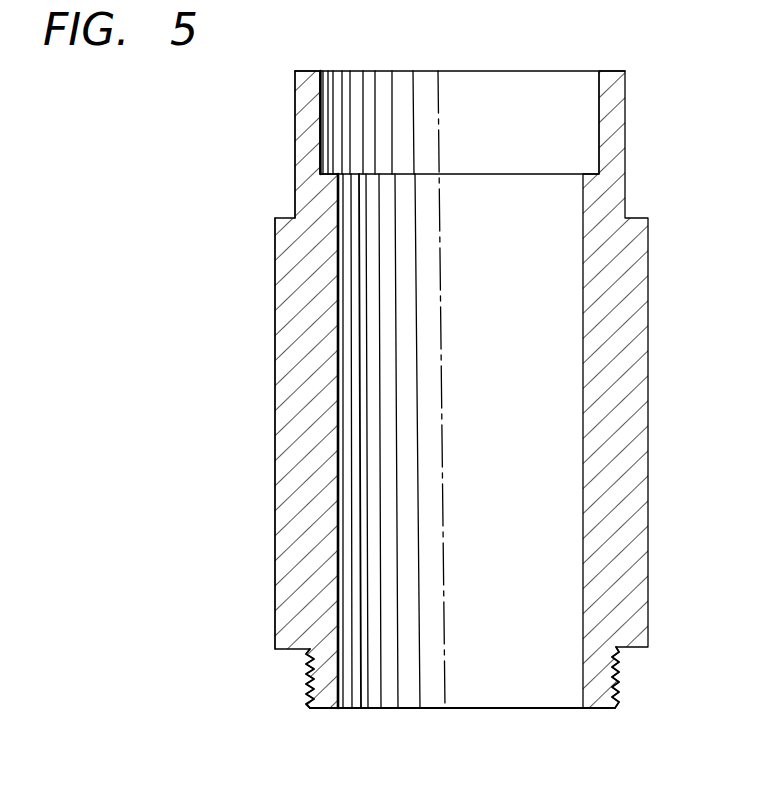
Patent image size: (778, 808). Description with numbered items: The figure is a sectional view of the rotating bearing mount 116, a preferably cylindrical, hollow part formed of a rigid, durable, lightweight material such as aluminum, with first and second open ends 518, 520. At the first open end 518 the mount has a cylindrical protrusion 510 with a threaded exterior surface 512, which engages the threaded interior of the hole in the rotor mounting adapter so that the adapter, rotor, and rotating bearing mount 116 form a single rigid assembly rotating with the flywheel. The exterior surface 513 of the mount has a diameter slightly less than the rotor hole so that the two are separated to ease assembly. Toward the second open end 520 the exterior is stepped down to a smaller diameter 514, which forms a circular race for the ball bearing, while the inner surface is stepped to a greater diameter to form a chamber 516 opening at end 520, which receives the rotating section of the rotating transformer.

The rotating bearing mount 116 is at (275, 384).
The cylindrical protrusion 510 is at (307, 680).
The threaded exterior surface 512 is at (618, 690).
The exterior surface 513 is at (275, 560).
The stepped exterior surface 514 is at (295, 160).
The chamber 516 is at (599, 128).
The first open end 518 is at (509, 709).
The second open end 520 is at (418, 71).